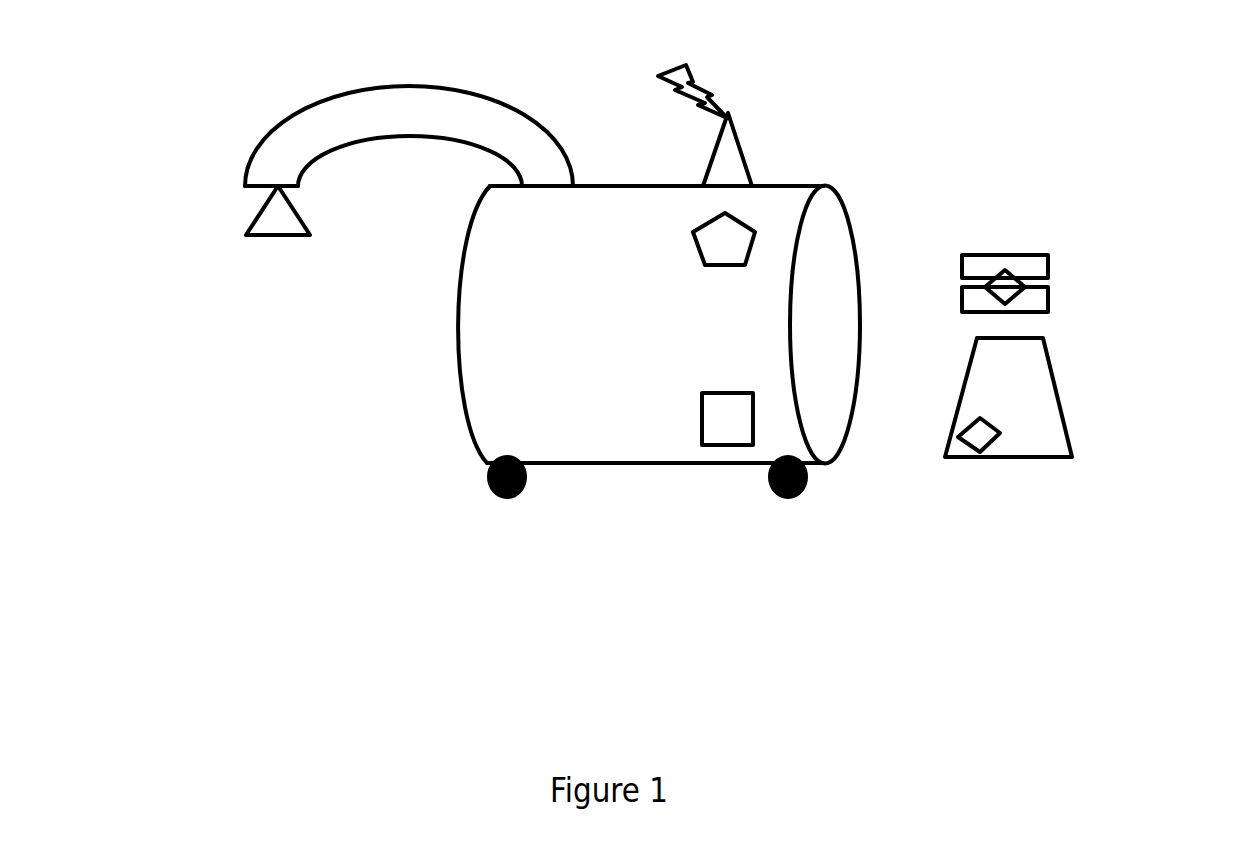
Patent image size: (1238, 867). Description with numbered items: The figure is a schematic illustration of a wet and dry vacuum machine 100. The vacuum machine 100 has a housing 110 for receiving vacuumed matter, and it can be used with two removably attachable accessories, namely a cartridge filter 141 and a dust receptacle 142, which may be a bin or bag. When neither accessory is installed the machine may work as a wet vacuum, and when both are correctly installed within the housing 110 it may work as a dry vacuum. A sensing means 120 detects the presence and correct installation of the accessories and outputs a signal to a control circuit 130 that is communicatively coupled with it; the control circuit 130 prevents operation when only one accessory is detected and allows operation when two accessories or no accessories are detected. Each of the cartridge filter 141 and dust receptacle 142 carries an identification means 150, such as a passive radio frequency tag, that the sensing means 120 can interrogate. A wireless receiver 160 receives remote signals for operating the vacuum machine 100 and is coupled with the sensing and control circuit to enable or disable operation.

The vacuum machine 100 is at (283, 366).
The housing 110 is at (573, 422).
The sensing means 120 is at (730, 238).
The control circuit 130 is at (723, 432).
The cartridge filter 141 is at (1048, 272).
The dust receptacle 142 is at (1038, 393).
The identification means 150 is at (1005, 283).
The wireless receiver 160 is at (732, 148).